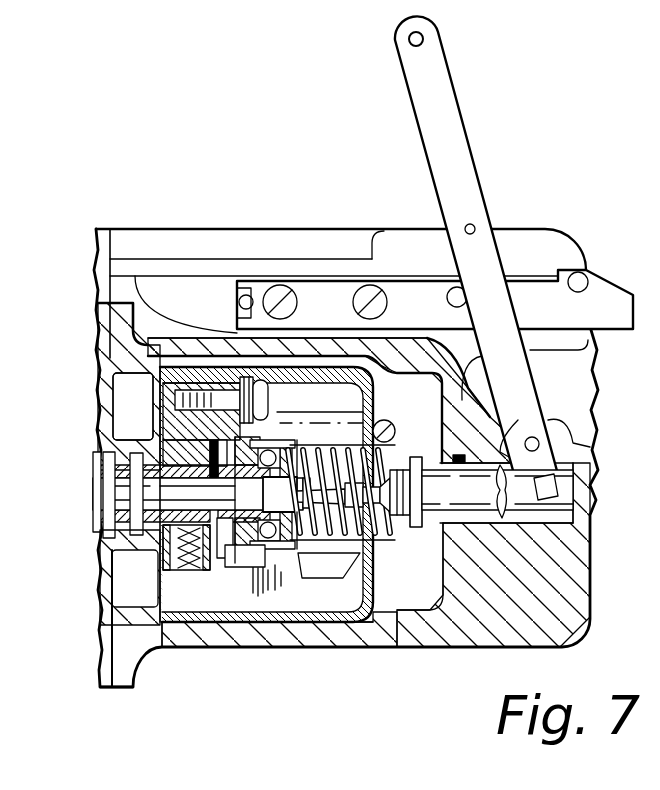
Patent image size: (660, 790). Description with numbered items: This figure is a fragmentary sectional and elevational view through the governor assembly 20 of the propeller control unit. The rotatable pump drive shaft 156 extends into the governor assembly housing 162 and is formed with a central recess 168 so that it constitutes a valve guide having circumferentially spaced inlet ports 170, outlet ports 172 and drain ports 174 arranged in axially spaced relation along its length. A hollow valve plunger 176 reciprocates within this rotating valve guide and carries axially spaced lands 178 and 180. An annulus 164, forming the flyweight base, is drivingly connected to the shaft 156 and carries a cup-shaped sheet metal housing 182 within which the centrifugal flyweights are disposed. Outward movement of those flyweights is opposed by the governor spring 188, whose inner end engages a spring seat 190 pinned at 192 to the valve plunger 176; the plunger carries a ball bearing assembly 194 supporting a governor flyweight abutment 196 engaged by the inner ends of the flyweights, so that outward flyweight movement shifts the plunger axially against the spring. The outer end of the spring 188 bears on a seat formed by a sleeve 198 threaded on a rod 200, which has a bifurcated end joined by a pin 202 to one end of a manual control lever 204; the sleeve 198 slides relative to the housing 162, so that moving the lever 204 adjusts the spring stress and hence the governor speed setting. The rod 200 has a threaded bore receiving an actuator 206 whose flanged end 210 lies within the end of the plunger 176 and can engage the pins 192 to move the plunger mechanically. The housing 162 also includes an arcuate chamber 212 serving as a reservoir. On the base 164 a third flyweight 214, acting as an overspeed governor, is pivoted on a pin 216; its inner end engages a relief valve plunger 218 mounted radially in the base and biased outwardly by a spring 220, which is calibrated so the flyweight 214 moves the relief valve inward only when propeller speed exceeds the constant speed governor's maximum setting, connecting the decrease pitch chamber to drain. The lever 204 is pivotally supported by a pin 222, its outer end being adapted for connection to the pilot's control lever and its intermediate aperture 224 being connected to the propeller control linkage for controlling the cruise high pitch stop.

The governor assembly 20 is at (642, 586).
The pump drive shaft 156 is at (98, 522).
The governor assembly housing 162 is at (590, 534).
The annulus 164 is at (185, 382).
The central recess 168 is at (162, 560).
The inlet ports 170 is at (100, 473).
The outlet ports 172 is at (139, 471).
The drain ports 174 is at (258, 452).
The valve plunger 176 is at (96, 512).
The land 178 is at (100, 492).
The land 180 is at (220, 490).
The cup-shaped sheet metal housing 182 is at (374, 552).
The governor spring 188 is at (413, 476).
The spring seat 190 is at (232, 604).
The pin 192 is at (303, 484).
The ball bearing assembly 194 is at (272, 545).
The governor flyweight abutment 196 is at (246, 565).
The sleeve 198 is at (506, 442).
The rod 200 is at (506, 500).
The pin 202 is at (558, 492).
The manual control lever 204 is at (468, 178).
The actuator 206 is at (345, 579).
The flanged end 210 is at (386, 420).
The arcuate chamber 212 is at (435, 600).
The third flyweight 214 is at (290, 550).
The pin 216 is at (205, 590).
The relief valve plunger 218 is at (163, 658).
The spring 220 is at (200, 578).
The pin 222 is at (493, 290).
The aperture 224 is at (478, 226).